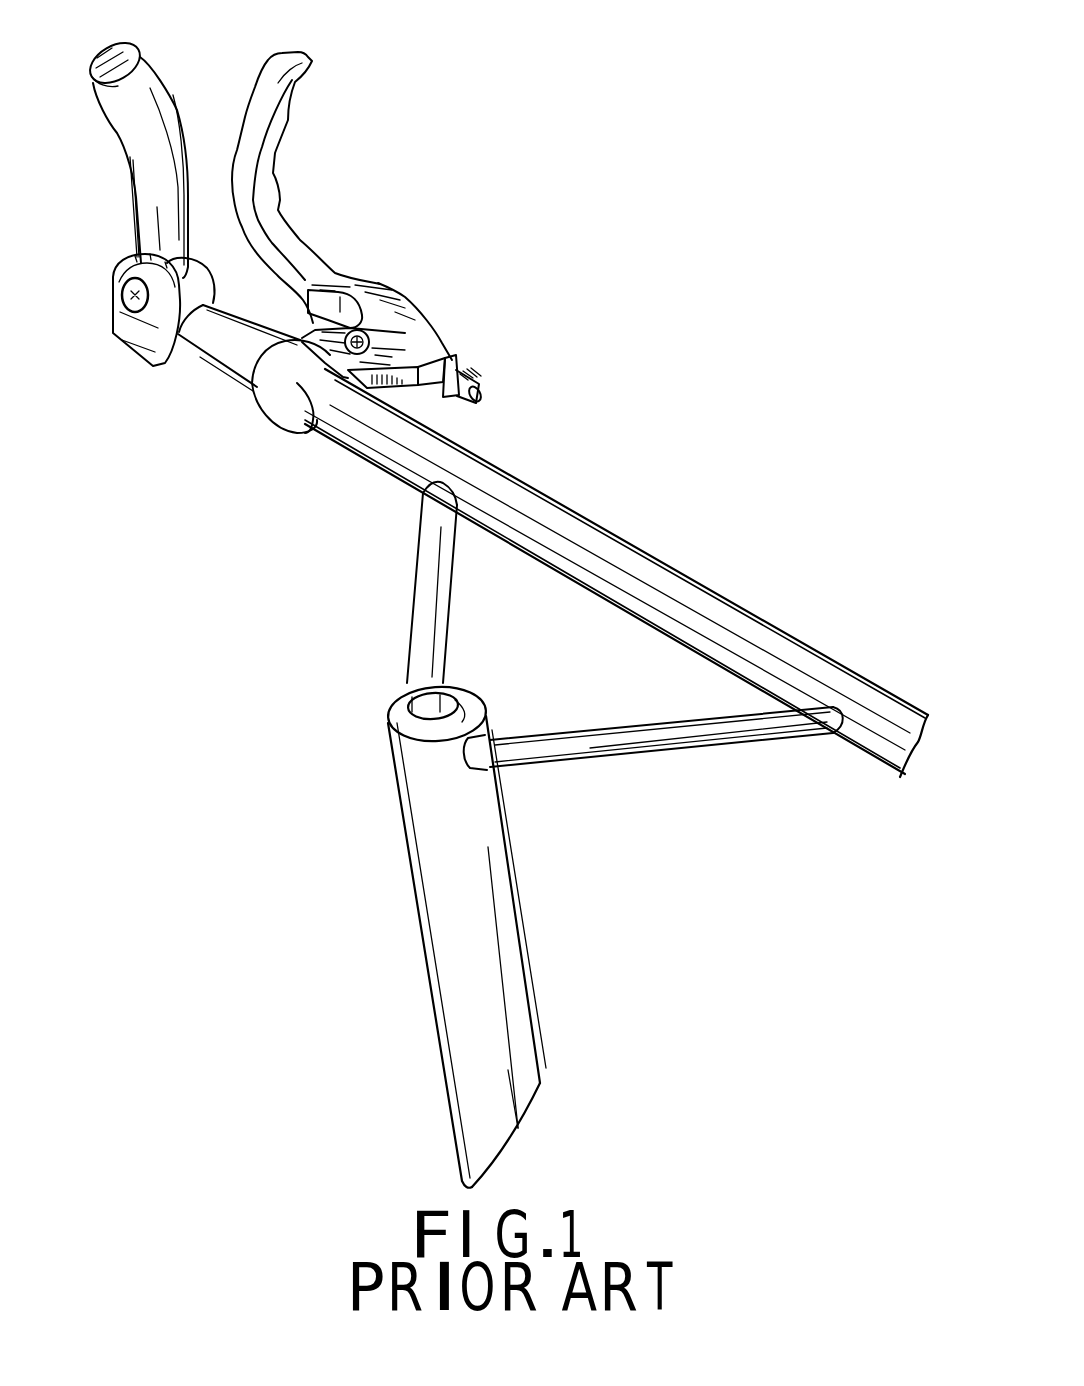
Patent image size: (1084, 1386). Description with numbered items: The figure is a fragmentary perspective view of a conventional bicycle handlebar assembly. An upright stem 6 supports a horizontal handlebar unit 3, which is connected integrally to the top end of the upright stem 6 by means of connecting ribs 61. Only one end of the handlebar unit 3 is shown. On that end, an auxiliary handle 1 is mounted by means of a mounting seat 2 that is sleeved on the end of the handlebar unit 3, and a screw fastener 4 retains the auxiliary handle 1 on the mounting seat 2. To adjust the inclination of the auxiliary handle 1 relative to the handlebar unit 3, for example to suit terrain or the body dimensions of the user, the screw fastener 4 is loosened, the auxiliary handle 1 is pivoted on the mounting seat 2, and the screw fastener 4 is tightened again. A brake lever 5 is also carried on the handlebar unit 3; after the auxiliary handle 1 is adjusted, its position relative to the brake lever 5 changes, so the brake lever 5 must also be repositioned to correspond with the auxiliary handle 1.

The auxiliary handle 1 is at (173, 97).
The mounting seat 2 is at (153, 363).
The handlebar unit 3 is at (357, 457).
The screw fastener 4 is at (113, 297).
The brake lever 5 is at (323, 260).
The upright stem 6 is at (520, 935).
The connecting ribs 61 is at (440, 615).